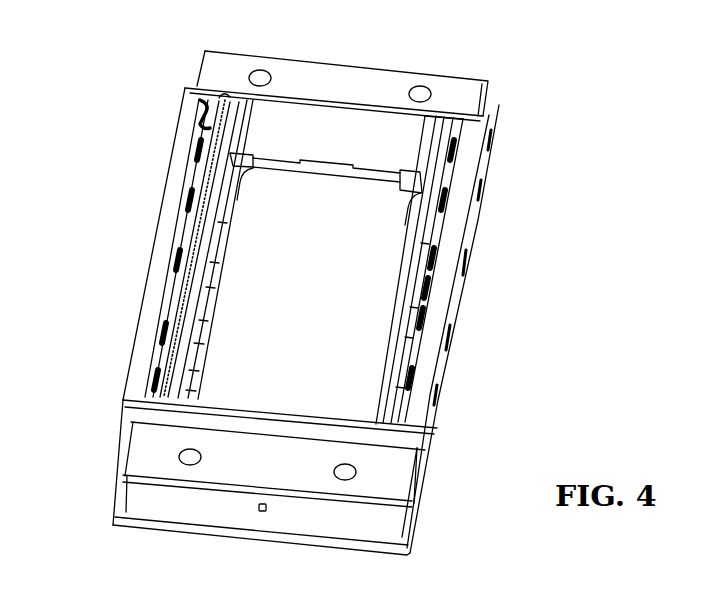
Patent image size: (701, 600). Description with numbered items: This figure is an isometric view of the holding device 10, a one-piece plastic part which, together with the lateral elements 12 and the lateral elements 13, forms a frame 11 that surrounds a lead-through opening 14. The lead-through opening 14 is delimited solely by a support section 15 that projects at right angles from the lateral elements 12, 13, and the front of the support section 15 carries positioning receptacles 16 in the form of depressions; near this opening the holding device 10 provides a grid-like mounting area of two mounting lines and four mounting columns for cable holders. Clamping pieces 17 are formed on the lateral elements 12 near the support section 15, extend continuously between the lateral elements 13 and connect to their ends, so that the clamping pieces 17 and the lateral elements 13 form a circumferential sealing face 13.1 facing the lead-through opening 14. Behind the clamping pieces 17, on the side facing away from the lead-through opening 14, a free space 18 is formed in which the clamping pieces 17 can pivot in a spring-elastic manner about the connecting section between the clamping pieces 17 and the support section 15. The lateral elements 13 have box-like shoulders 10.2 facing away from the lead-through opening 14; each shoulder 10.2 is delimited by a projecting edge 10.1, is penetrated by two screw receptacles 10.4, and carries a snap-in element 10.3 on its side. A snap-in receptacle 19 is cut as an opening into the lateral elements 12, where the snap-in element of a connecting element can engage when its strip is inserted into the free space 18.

The holding device 10 is at (136, 222).
The projecting edge 10.1 is at (119, 492).
The shoulder 10.2 is at (158, 503).
The snap-in element 10.3 is at (262, 512).
The screw receptacle 10.4 is at (356, 472).
The frame 11 is at (187, 86).
The lateral element 12 is at (183, 165).
The lateral element 13 is at (386, 104).
The sealing face 13.1 is at (340, 130).
The lead-through opening 14 is at (238, 306).
The support section 15 is at (238, 162).
The positioning receptacle 16 is at (296, 170).
The clamping piece 17 is at (230, 117).
The free space 18 is at (207, 100).
The snap-in receptacle 19 is at (440, 392).